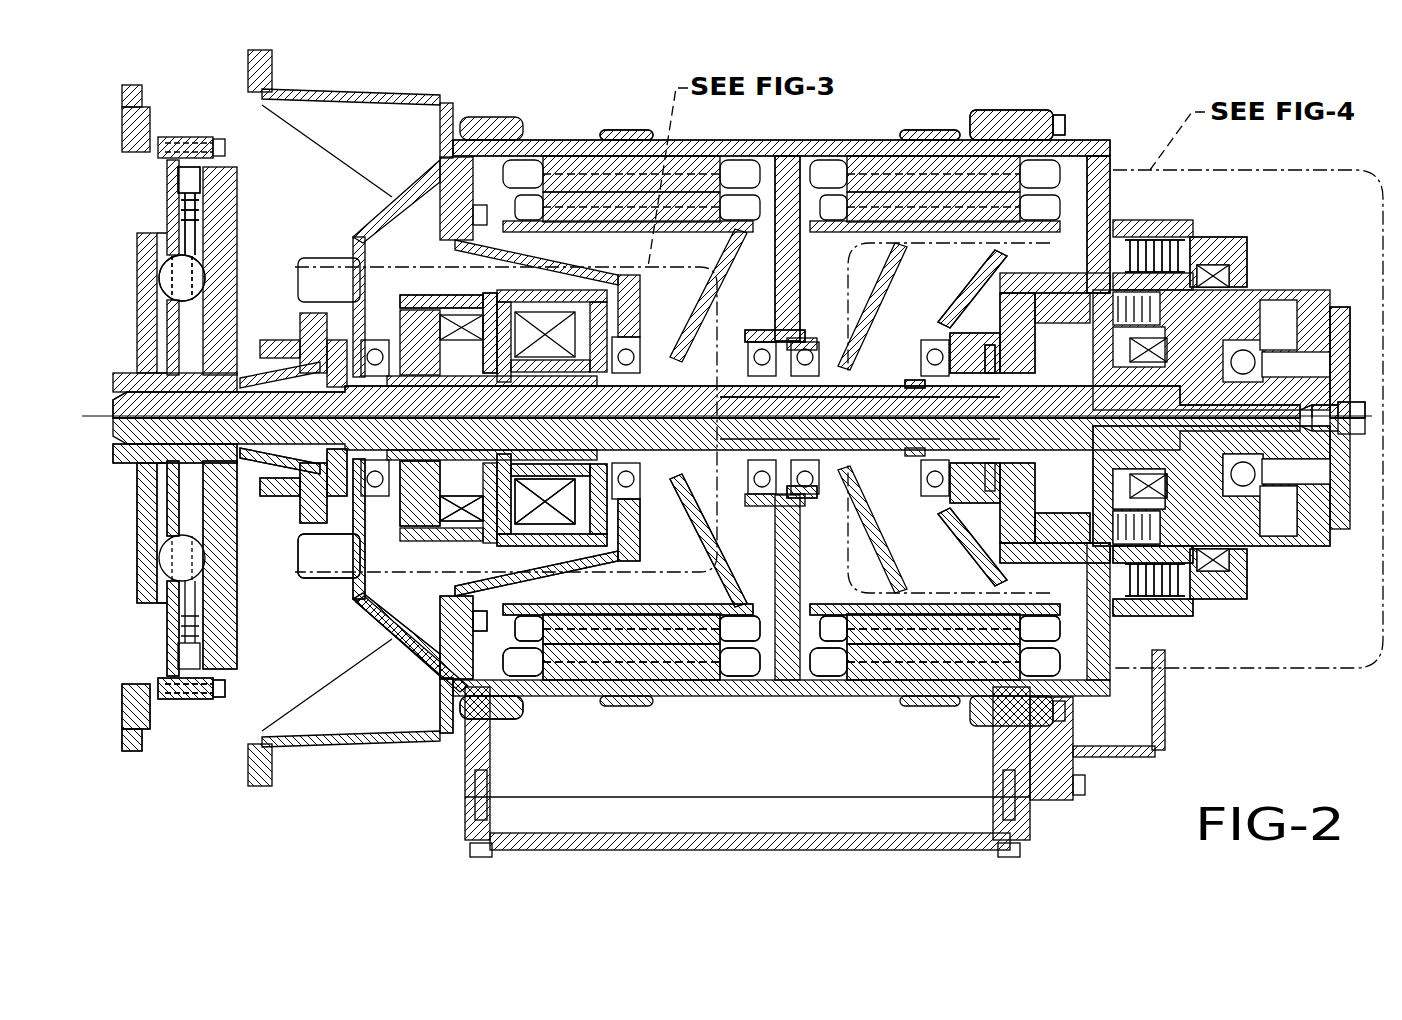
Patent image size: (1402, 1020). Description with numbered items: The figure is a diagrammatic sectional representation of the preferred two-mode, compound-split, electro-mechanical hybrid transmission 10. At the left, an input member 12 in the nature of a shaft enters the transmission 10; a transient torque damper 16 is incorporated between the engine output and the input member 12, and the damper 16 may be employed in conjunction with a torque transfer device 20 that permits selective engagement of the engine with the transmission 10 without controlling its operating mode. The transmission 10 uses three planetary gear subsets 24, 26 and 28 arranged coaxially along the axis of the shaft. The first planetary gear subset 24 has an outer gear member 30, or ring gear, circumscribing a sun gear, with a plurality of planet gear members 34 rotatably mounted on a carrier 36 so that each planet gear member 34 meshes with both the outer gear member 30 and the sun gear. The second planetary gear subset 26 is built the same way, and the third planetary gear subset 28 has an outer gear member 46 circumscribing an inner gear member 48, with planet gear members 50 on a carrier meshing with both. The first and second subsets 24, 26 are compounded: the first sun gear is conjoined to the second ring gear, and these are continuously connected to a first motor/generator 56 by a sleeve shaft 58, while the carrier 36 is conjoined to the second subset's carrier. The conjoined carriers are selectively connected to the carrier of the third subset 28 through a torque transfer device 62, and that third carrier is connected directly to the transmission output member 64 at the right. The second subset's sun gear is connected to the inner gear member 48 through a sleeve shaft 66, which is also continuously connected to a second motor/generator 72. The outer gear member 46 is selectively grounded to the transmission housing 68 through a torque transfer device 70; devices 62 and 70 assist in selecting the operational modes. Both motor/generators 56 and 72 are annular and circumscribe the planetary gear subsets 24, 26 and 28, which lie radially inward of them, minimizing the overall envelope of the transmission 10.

The hybrid transmission 10 is at (906, 82).
The input member 12 is at (175, 430).
The transient torque damper 16 is at (155, 620).
The torque transfer device 20 is at (203, 247).
The first planetary gear subset 24 is at (437, 559).
The second planetary gear subset 26 is at (521, 551).
The third planetary gear subset 28 is at (988, 528).
The outer gear member 30 is at (470, 305).
The planet gear members 34 is at (430, 318).
The carrier 36 is at (422, 493).
The outer gear member 46 is at (1034, 560).
The inner gear member 48 is at (1052, 385).
The planet gear members 50 is at (1047, 306).
The first motor/generator 56 is at (615, 679).
The sleeve shaft 58 is at (703, 468).
The torque transfer device 62 is at (1145, 299).
The transmission output member 64 is at (1287, 393).
The sleeve shaft 66 is at (915, 386).
The transmission housing 68 is at (1243, 583).
The torque transfer device 70 is at (1174, 598).
The second motor/generator 72 is at (884, 679).